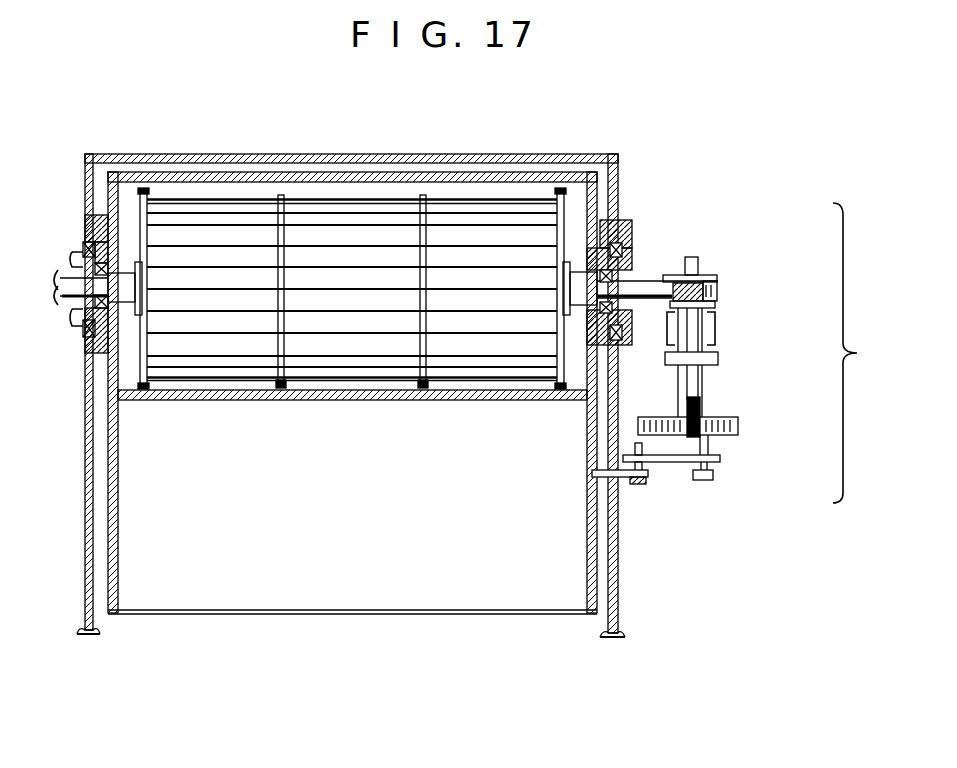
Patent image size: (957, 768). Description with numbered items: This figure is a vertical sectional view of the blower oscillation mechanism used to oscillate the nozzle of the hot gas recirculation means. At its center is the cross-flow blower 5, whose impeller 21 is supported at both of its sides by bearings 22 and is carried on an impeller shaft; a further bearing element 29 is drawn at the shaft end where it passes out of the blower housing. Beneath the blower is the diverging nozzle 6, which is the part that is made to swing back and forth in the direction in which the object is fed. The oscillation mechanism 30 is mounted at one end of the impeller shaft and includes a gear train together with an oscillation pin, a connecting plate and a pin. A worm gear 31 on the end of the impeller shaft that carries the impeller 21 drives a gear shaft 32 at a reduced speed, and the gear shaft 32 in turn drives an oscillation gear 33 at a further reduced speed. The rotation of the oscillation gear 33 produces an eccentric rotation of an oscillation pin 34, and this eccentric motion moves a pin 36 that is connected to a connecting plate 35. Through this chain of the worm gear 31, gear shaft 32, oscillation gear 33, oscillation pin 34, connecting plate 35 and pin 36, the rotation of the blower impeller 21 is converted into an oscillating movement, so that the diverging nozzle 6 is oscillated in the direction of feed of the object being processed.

The cross-flow blower 5 is at (440, 178).
The diverging nozzle 6 is at (593, 553).
The impeller 21 is at (520, 207).
The bearings 22 is at (633, 278).
The bearing 29 is at (620, 243).
The oscillation mechanism 30 is at (748, 373).
The worm gear 31 is at (700, 286).
The gear shaft 32 is at (720, 288).
The oscillation gear 33 is at (720, 418).
The oscillation pin 34 is at (710, 441).
The connecting plate 35 is at (720, 461).
The pin 36 is at (648, 473).